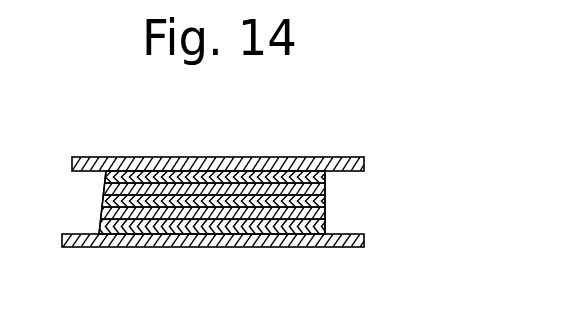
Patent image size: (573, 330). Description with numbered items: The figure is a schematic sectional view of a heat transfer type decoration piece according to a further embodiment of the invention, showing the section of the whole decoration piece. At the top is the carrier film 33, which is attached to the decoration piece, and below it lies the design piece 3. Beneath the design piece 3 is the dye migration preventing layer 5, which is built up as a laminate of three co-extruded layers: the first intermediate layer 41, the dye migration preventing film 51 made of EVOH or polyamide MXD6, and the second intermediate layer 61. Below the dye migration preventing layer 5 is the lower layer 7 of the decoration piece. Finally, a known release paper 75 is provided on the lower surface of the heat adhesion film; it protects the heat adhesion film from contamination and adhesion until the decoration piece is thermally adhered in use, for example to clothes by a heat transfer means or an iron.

The carrier film 33 is at (250, 157).
The release paper 75 is at (290, 247).
The design piece 3 is at (325, 173).
The first intermediate layer 41 is at (325, 188).
The dye migration preventing film 51 is at (325, 202).
The second intermediate layer 61 is at (325, 213).
The lower layer 7 is at (325, 228).
The dye migration preventing layer 5 is at (97, 180).